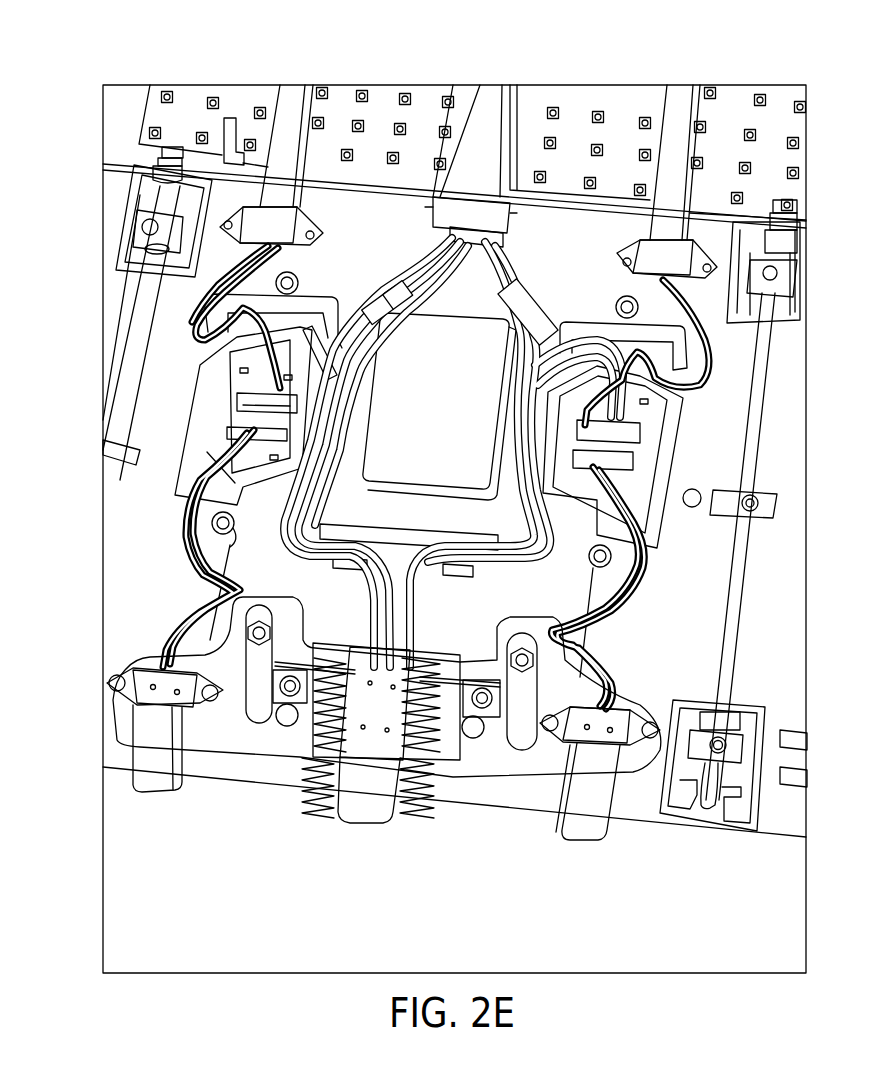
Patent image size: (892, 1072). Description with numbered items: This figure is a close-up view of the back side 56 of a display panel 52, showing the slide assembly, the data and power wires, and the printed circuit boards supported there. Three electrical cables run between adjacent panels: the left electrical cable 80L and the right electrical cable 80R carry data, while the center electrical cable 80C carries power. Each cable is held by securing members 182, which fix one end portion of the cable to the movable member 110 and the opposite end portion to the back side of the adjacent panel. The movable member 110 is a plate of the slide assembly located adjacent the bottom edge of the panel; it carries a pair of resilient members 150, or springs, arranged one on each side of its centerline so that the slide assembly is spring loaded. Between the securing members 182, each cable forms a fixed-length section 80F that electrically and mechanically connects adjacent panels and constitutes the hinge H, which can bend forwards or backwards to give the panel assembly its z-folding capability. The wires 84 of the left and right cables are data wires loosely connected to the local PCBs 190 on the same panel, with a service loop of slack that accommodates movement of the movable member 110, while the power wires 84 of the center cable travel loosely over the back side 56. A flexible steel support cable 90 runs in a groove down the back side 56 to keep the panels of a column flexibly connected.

The panel 52 is at (84, 254).
The back side 56 is at (152, 591).
The right electrical cable 80R is at (298, 92).
The center electrical cable 80C is at (490, 100).
The left electrical cable 80L is at (683, 95).
The fixed-length cable section 80F is at (593, 825).
The wires 84 is at (280, 253).
The support cable 90 is at (763, 358).
The movable member 110 is at (590, 677).
The resilient member 150 is at (318, 823).
The securing member 182 is at (282, 214).
The printed circuit board 190 is at (230, 397).
The hinge H is at (155, 805).